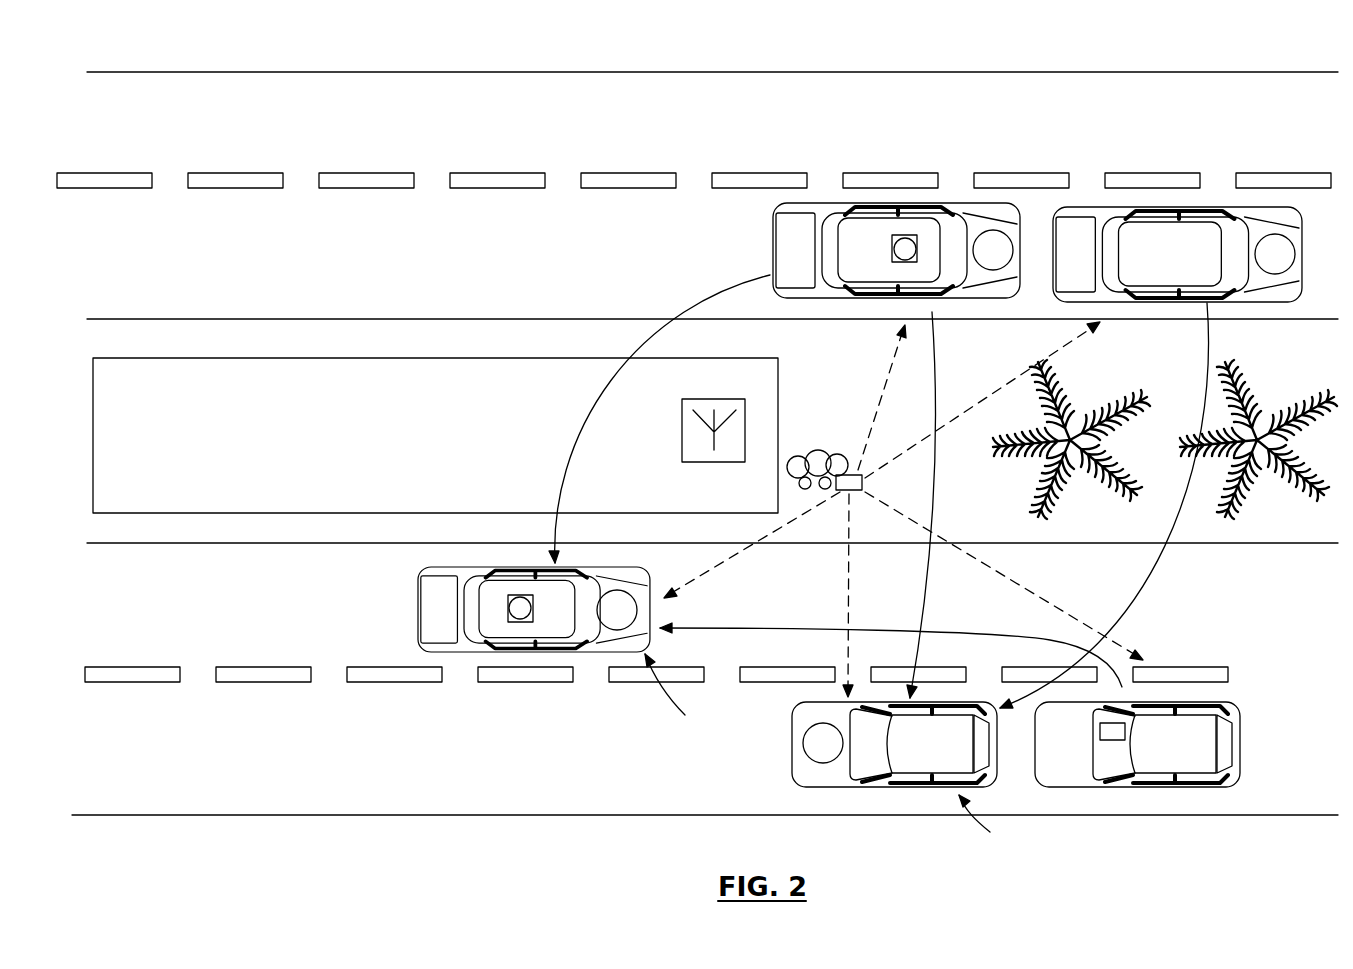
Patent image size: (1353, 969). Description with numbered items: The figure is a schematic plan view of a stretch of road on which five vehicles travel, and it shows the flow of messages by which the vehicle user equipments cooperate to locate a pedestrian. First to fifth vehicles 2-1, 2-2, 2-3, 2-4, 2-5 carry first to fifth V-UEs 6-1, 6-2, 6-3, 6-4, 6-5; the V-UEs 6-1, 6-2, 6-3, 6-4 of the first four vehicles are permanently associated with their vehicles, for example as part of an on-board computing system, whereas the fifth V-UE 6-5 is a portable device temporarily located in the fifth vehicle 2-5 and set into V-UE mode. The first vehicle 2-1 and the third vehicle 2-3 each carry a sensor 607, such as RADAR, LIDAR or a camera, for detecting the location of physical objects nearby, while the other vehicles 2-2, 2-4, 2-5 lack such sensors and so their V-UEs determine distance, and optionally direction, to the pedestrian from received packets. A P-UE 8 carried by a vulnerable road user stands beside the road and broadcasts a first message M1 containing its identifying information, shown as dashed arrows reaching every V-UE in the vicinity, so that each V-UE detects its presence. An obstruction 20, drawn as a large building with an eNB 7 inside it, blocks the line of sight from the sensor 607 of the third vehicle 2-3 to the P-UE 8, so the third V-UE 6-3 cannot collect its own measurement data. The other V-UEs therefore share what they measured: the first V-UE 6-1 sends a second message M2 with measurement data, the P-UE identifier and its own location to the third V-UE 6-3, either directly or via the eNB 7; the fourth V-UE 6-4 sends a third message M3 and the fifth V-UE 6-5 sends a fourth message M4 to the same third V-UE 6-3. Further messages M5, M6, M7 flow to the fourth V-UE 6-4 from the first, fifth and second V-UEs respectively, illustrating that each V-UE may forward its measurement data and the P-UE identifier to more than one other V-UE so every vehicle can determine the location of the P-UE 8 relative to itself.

The first vehicle 2-1 is at (773, 226).
The second vehicle 2-2 is at (1210, 206).
The third vehicle 2-3 is at (418, 596).
The fourth vehicle 2-4 is at (868, 787).
The fifth vehicle 2-5 is at (1243, 730).
The first V-UE 6-1 is at (993, 250).
The second V-UE 6-2 is at (1275, 254).
The third V-UE 6-3 is at (617, 610).
The fourth V-UE 6-4 is at (823, 743).
The fifth V-UE 6-5 is at (1110, 740).
The sensor 607 is at (905, 238).
The eNB 7 is at (694, 462).
The P-UE 8 is at (852, 474).
The obstruction 20 is at (548, 358).
The first message M1 is at (903, 509).
The second message M2 is at (659, 419).
The third message M3 is at (790, 745).
The fourth message M4 is at (891, 651).
The message M5 is at (925, 505).
The message M6 is at (991, 819).
The message M7 is at (1104, 505).